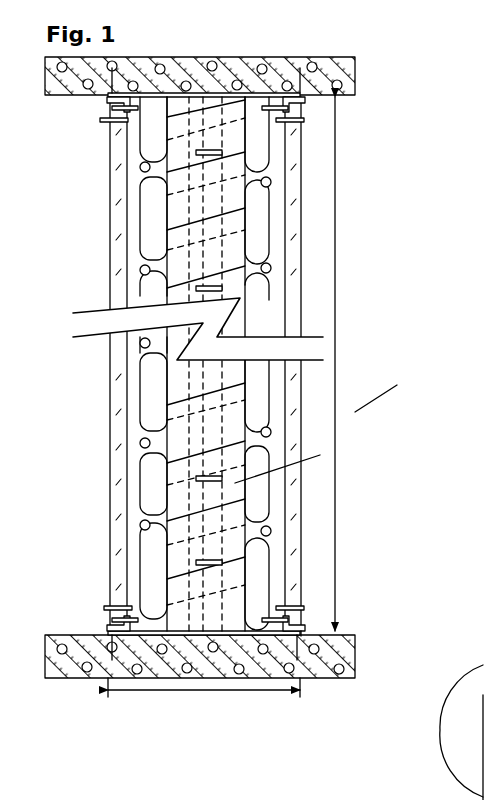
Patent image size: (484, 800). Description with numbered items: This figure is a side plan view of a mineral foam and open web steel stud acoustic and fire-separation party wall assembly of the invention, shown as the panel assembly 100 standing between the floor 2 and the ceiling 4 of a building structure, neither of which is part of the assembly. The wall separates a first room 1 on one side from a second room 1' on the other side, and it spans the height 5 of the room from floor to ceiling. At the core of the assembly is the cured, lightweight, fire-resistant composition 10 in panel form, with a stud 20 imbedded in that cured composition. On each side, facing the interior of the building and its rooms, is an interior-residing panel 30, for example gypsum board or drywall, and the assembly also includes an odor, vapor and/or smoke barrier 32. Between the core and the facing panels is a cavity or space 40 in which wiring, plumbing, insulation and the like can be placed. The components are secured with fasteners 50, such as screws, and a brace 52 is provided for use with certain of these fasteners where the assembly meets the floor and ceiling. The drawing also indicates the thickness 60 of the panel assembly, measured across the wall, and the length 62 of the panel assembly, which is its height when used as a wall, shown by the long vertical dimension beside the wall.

The first room 1 is at (68, 255).
The second room 1' is at (394, 538).
The floor 2 is at (90, 635).
The ceiling 4 is at (107, 97).
The height of a room 5 is at (336, 347).
The lightweight, fire-resistant composition 10 is at (320, 455).
The stud 20 is at (270, 462).
The building/room-interior-residing/facing panel 30 is at (110, 208).
The odor, vapor and/or smoke barrier 32 is at (228, 104).
The cavity or space 40 is at (252, 306).
The fasteners 50 is at (120, 108).
The brace 52 is at (320, 612).
The thickness of the panel assembly 60 is at (185, 700).
The length of the panel assembly 62 is at (379, 404).
The panel assembly 100 is at (413, 178).